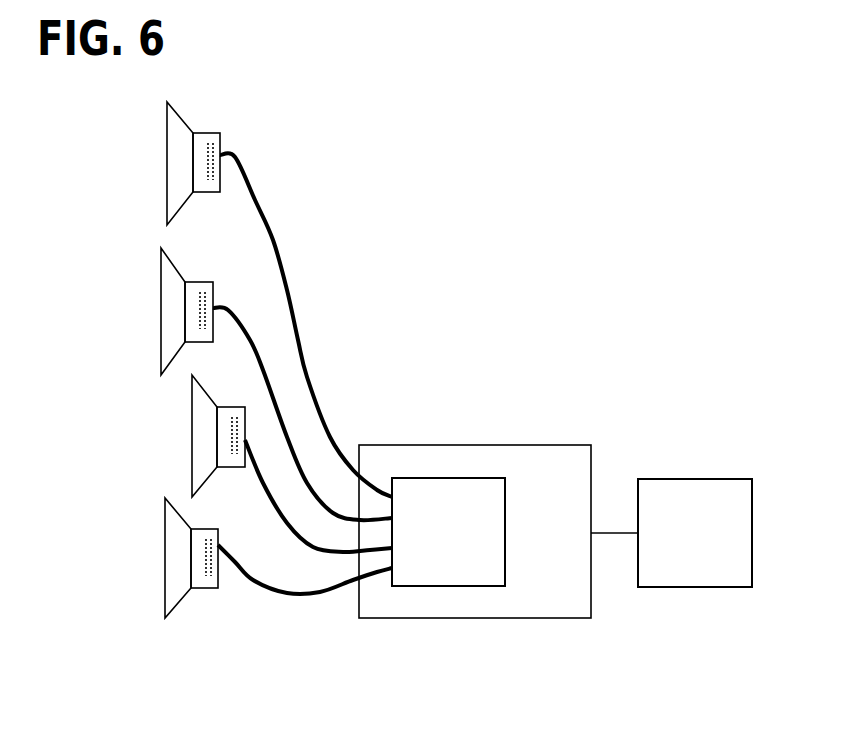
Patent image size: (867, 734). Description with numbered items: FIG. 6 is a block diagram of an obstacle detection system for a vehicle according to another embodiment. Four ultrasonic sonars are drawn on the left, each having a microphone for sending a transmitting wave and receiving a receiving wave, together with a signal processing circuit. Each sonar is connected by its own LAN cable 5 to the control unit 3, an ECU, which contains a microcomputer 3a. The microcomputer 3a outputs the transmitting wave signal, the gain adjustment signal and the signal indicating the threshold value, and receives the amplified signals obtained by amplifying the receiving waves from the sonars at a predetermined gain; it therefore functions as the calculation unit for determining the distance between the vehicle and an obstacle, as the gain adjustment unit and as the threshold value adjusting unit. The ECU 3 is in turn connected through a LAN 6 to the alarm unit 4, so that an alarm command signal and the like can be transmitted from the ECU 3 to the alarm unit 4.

The control unit 3 is at (552, 445).
The microcomputer 3a is at (505, 560).
The alarm unit 4 is at (725, 479).
The LAN cable 5 is at (300, 352).
The LAN 6 is at (613, 533).